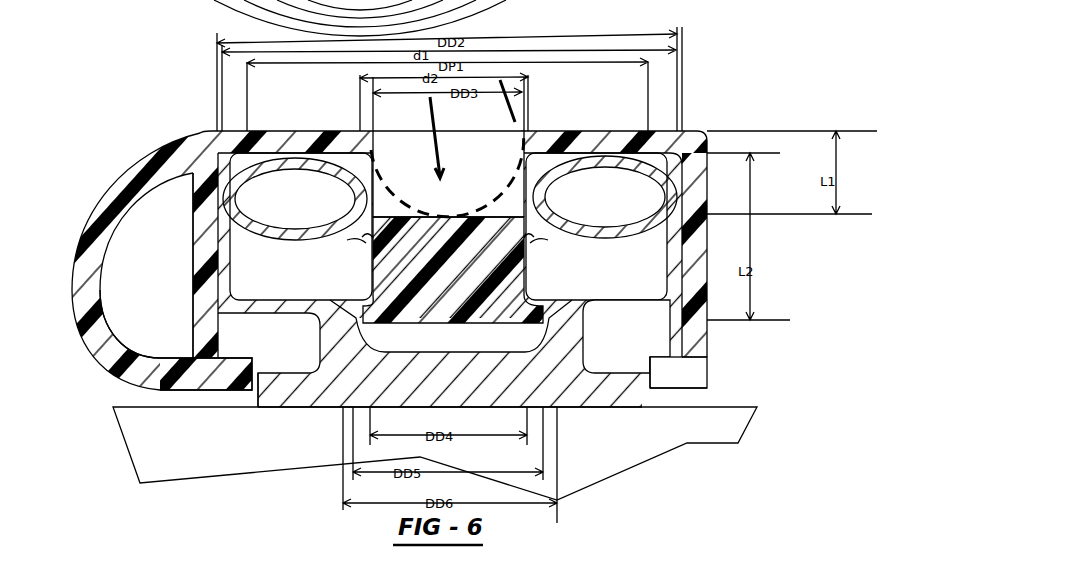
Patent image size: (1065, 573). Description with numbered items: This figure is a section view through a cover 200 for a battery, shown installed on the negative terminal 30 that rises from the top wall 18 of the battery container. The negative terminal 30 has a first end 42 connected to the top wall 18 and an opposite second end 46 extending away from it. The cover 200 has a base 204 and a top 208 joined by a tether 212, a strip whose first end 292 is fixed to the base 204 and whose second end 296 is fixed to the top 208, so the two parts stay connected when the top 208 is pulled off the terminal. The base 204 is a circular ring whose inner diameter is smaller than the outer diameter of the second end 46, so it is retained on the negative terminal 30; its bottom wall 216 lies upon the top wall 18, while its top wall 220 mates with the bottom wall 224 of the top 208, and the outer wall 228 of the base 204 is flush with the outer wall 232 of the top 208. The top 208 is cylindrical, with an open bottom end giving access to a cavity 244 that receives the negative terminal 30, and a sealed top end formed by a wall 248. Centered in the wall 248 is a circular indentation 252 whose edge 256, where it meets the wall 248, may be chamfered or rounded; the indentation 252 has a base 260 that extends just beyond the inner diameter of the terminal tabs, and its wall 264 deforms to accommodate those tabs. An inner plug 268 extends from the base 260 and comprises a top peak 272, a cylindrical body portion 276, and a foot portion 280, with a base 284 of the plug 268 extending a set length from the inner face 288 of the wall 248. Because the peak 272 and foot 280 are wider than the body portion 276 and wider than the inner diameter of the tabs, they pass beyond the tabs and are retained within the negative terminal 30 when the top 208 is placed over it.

The cover 200 is at (205, 130).
The second end 46 is at (188, 160).
The wall 248 is at (279, 131).
The tether 212 is at (82, 258).
The second end 296 is at (183, 175).
The first end 42 is at (247, 230).
The top 208 is at (197, 327).
The first end 292 is at (170, 393).
The top wall 18 is at (175, 418).
The cavity 244 is at (252, 335).
The negative terminal 30 is at (292, 395).
The foot portion 280 is at (353, 300).
The top peak 272 is at (358, 237).
The cylindrical body portion 276 is at (380, 263).
The base of the plug 284 is at (428, 325).
The wall of the indentation 264 is at (392, 214).
The base of the indentation 260 is at (398, 215).
The indentation 252 is at (472, 150).
The edge 256 is at (540, 145).
The inner plug 268 is at (520, 281).
The inner face 288 is at (690, 131).
The outer wall 232 is at (709, 333).
The bottom wall 224 is at (693, 360).
The base 204 is at (700, 366).
The outer wall 228 is at (710, 378).
The bottom wall 216 is at (672, 390).
The top wall 220 is at (666, 353).